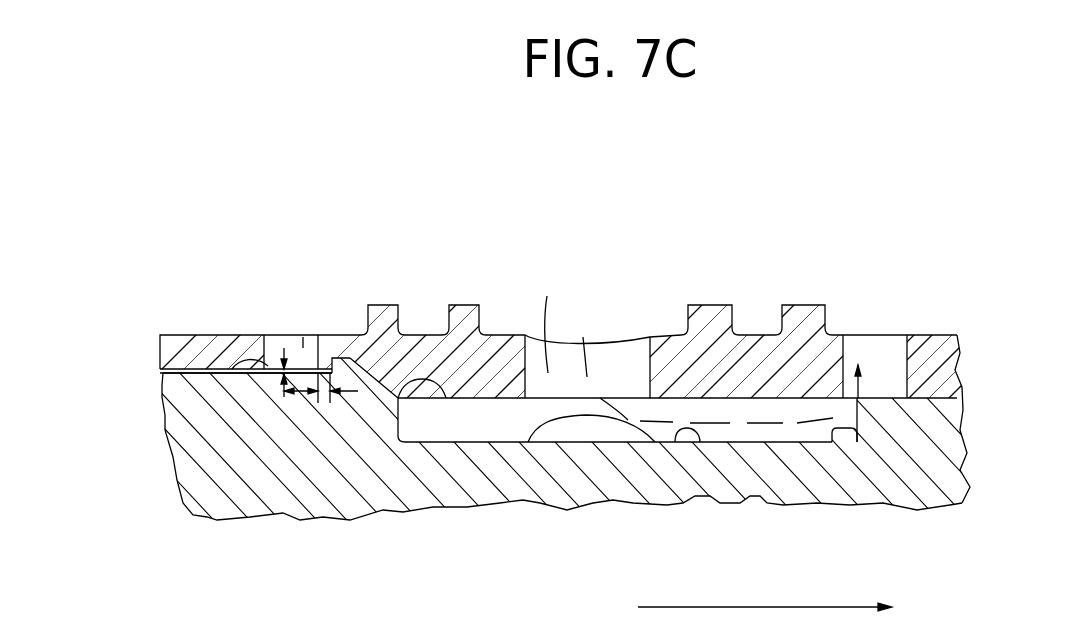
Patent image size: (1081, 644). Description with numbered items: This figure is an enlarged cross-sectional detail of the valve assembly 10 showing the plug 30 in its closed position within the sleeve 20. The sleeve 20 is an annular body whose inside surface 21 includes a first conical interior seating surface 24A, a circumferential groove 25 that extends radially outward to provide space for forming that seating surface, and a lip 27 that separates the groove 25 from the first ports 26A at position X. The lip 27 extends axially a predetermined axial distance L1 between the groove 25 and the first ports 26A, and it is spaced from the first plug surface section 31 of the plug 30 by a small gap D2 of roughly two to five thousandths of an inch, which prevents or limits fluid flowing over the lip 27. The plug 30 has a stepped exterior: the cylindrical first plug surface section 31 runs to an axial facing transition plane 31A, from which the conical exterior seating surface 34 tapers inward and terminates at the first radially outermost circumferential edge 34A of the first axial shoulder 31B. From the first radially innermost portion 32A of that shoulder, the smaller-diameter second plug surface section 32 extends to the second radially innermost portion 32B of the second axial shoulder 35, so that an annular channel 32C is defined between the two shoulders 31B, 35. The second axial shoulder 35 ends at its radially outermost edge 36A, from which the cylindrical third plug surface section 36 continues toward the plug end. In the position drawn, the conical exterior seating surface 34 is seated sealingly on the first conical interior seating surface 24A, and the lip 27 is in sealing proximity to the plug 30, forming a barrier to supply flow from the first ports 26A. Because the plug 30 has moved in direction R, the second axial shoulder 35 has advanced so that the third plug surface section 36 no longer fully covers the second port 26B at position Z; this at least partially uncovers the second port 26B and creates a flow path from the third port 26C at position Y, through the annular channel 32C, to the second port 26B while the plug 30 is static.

The valve assembly 10 is at (603, 216).
The sleeve 20 is at (185, 343).
The inside surface 21 is at (163, 397).
The first conical interior seating surface 24A is at (400, 345).
The groove 25 is at (330, 403).
The first port 26A is at (275, 335).
The second port 26B is at (887, 358).
The third port 26C is at (617, 365).
The lip 27 is at (325, 334).
The plug 30 is at (195, 448).
The first plug surface section 31 is at (202, 515).
The axial facing transition plane 31A is at (367, 357).
The first axial shoulder 31B is at (399, 445).
The second plug surface section 32 is at (682, 442).
The first radially innermost portion 32A is at (396, 436).
The second radially innermost portion 32B is at (856, 444).
The annular channel 32C is at (573, 437).
The conical exterior seating surface 34 is at (408, 440).
The first radially outermost circumferential edge 34A is at (415, 442).
The second axial shoulder 35 is at (837, 436).
The third plug surface section 36 is at (883, 385).
The radially outermost edge 36A is at (874, 360).
The gap D2 is at (288, 337).
The position X is at (303, 337).
The position Y is at (547, 317).
The position Z is at (859, 362).
The predetermined axial distance L1 is at (318, 403).
The direction R is at (748, 607).